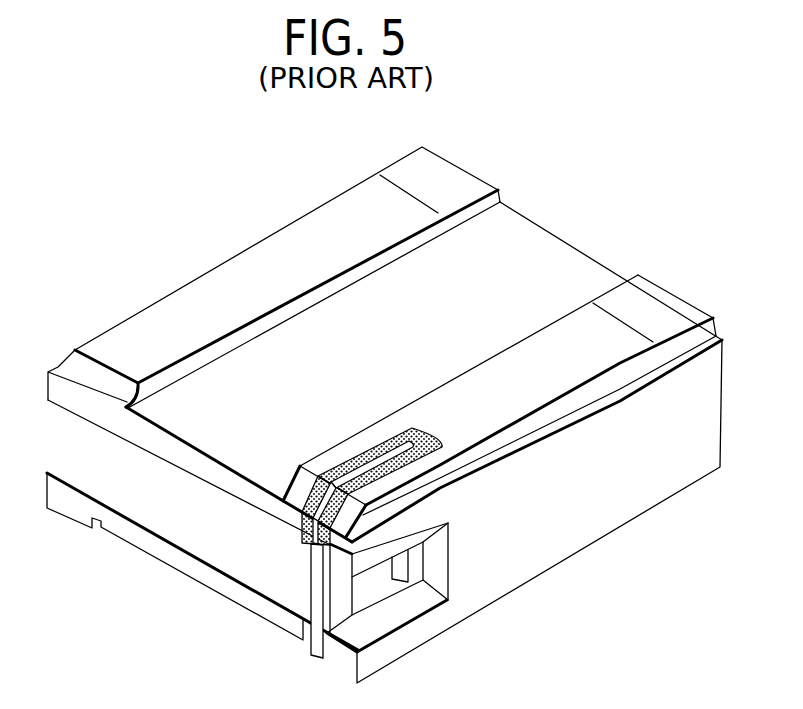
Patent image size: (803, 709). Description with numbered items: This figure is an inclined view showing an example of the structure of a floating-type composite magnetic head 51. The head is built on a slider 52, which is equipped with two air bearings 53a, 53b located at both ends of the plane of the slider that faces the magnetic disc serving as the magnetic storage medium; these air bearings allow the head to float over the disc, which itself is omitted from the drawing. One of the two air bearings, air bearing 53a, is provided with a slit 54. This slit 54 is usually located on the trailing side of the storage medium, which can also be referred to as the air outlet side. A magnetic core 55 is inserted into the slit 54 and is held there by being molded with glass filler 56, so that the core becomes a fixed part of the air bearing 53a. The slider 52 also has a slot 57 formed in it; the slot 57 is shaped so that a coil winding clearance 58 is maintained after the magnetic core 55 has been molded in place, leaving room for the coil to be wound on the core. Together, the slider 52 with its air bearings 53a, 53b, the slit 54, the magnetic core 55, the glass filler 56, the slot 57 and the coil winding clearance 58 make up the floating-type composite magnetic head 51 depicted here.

The floating-type composite magnetic head 51 is at (580, 226).
The slider 52 is at (302, 330).
The air bearing 53a is at (563, 378).
The air bearing 53b is at (172, 318).
The slit 54 is at (420, 460).
The magnetic core 55 is at (315, 645).
The glass filler 56 is at (395, 447).
The slot 57 is at (227, 532).
The coil winding clearance 58 is at (370, 572).